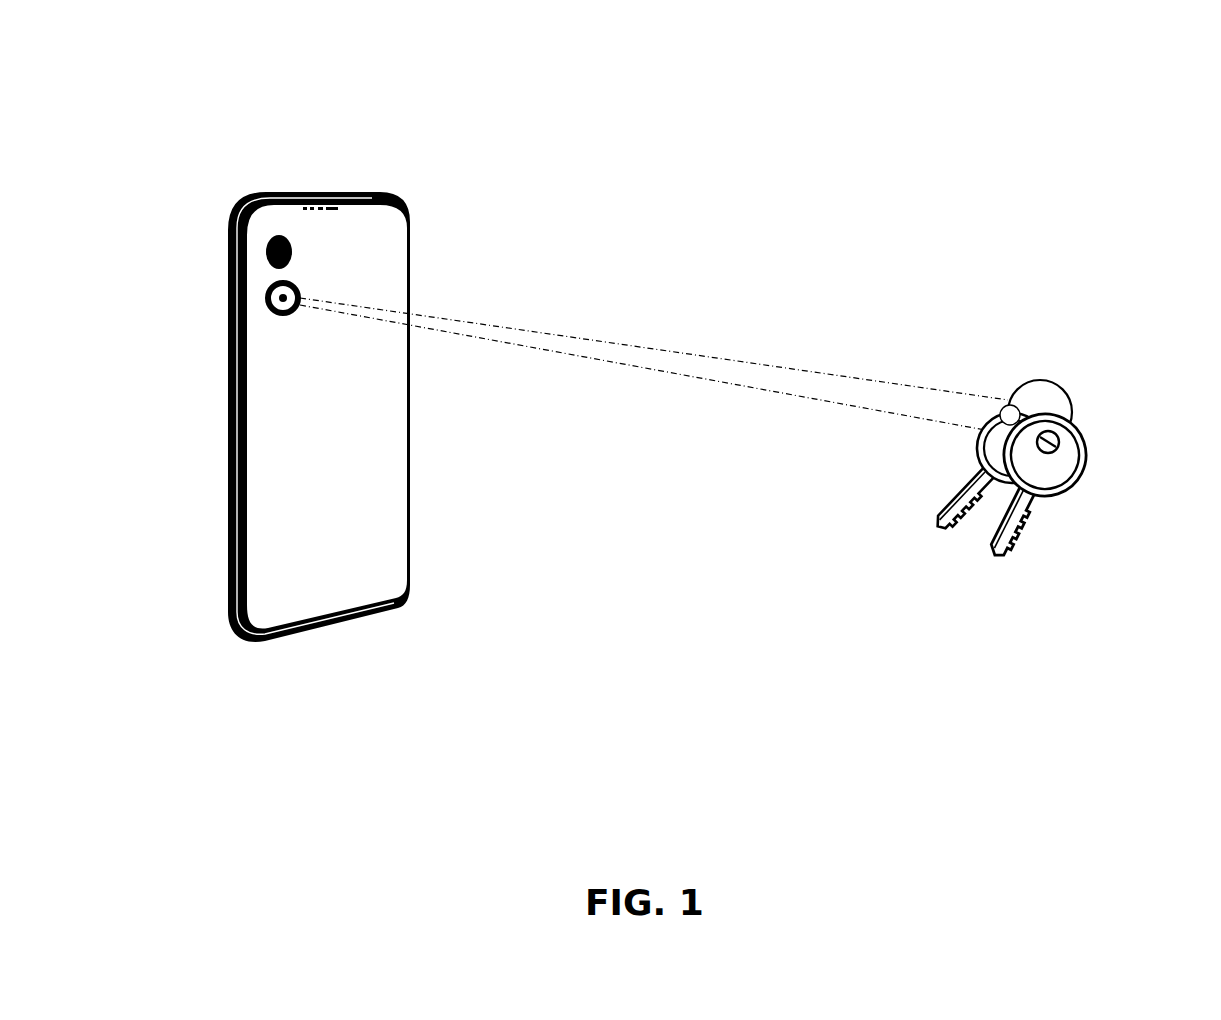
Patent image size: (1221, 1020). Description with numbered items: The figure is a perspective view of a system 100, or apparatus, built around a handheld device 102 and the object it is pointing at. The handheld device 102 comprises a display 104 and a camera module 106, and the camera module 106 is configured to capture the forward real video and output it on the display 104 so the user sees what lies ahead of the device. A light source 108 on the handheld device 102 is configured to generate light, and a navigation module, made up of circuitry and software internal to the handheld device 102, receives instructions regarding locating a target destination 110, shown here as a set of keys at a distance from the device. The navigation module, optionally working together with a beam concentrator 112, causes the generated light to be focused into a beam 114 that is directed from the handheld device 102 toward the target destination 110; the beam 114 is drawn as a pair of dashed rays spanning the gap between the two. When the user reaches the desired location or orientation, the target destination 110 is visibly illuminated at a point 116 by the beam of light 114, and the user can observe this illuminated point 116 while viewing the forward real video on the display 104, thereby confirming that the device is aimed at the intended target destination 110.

The system 100 is at (1054, 66).
The handheld device 102 is at (392, 412).
The display 104 is at (228, 483).
The camera module 106 is at (276, 236).
The light source 108 is at (268, 288).
The target destination 110 is at (1047, 480).
The beam concentrator 112 is at (280, 318).
The beam 114 is at (742, 363).
The point 116 is at (1008, 406).